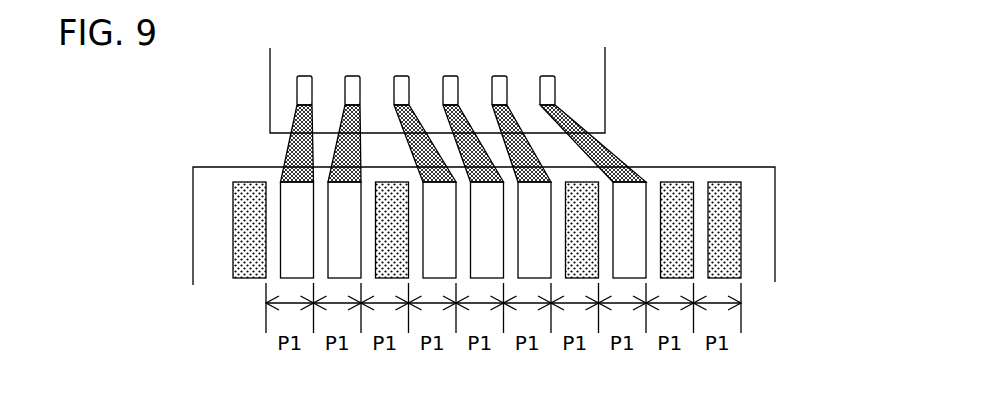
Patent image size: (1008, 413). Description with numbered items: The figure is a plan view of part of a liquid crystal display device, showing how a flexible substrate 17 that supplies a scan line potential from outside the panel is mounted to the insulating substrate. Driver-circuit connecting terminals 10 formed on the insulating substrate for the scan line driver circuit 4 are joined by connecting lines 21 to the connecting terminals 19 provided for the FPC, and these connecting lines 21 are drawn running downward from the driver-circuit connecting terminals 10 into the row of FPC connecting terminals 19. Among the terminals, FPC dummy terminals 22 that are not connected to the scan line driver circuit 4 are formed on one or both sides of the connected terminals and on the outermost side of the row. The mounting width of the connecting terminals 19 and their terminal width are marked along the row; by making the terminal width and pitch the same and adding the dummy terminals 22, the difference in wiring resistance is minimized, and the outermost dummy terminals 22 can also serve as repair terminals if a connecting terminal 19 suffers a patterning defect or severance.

The scan line driver circuit 4 is at (605, 113).
The driver-circuit connecting terminals 10 is at (555, 92).
The connecting lines 21 is at (604, 146).
The connecting terminals 19 is at (648, 192).
The flexible substrate 17 is at (777, 175).
The FPC dummy terminals 22 is at (740, 247).